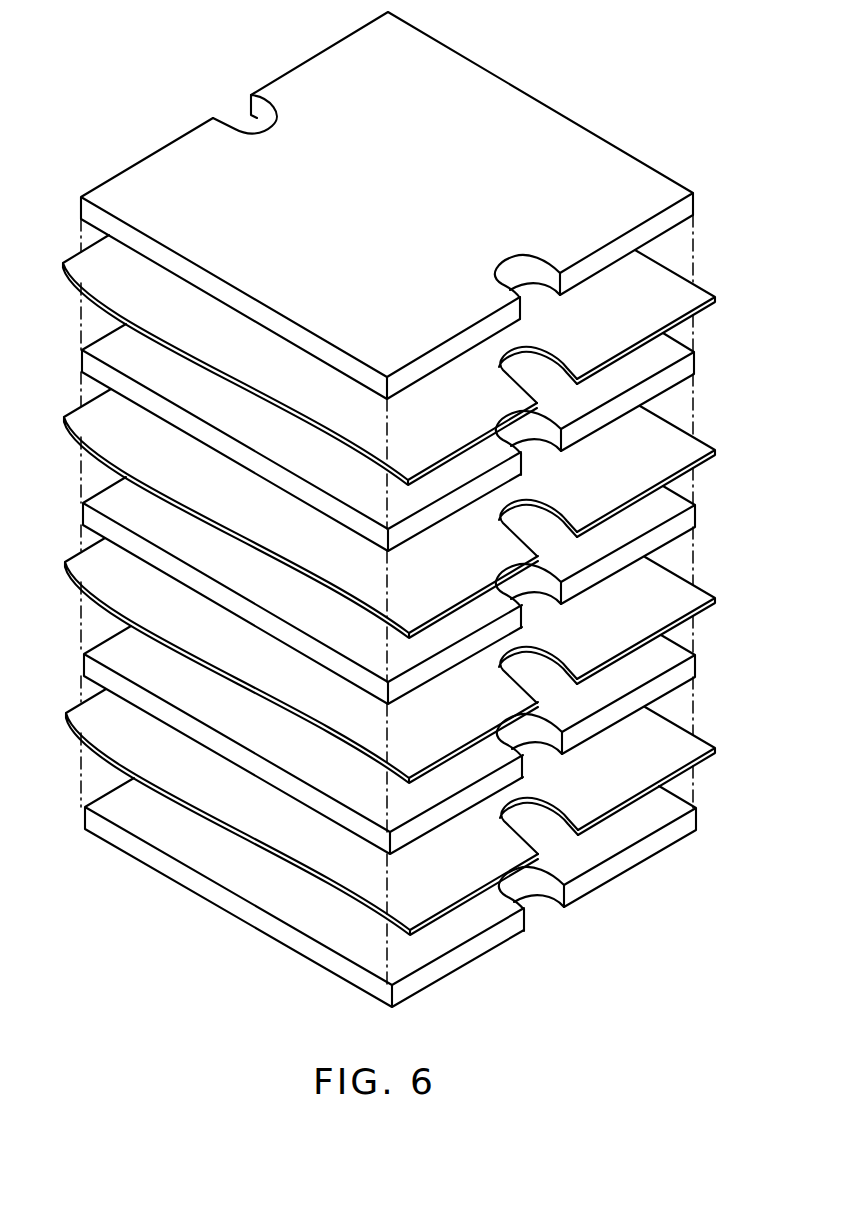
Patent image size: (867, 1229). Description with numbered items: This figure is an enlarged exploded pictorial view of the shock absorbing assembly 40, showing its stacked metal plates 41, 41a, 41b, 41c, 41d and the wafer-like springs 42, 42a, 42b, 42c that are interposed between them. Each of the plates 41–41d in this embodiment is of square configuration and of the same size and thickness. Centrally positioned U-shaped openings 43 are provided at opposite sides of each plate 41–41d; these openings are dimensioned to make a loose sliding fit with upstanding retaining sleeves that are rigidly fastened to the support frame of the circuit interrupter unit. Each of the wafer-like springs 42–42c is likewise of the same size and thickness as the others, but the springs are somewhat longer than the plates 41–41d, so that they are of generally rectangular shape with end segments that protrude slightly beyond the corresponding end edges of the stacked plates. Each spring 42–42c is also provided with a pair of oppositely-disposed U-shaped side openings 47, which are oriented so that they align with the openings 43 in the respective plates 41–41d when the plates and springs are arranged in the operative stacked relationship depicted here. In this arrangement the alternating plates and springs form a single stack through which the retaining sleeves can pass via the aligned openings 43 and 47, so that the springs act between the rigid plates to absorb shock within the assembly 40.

The shock absorbing assembly 40 is at (648, 57).
The metal plate 41 is at (122, 203).
The metal plate 41a is at (107, 353).
The metal plate 41b is at (117, 507).
The metal plate 41c is at (120, 660).
The metal plate 41d is at (187, 850).
The wafer-like spring 42 is at (697, 293).
The wafer-like spring 42a is at (698, 450).
The wafer-like spring 42b is at (698, 598).
The wafer-like spring 42c is at (695, 747).
The U-shaped opening 43 is at (252, 108).
The U-shaped side opening 47 is at (568, 828).